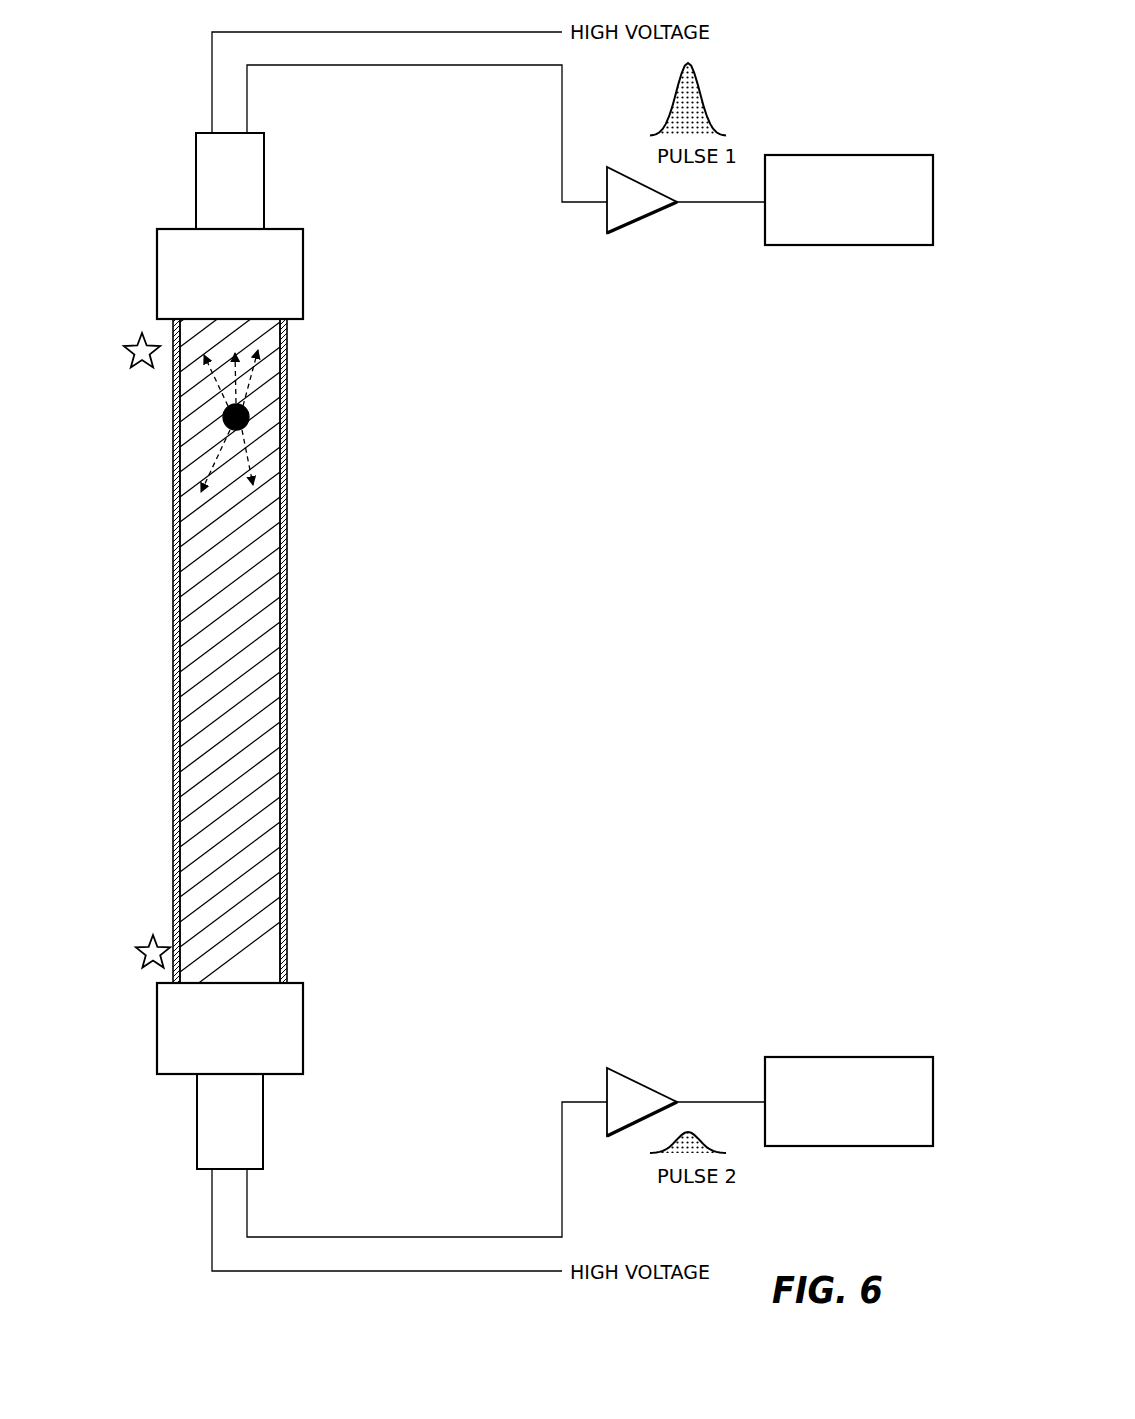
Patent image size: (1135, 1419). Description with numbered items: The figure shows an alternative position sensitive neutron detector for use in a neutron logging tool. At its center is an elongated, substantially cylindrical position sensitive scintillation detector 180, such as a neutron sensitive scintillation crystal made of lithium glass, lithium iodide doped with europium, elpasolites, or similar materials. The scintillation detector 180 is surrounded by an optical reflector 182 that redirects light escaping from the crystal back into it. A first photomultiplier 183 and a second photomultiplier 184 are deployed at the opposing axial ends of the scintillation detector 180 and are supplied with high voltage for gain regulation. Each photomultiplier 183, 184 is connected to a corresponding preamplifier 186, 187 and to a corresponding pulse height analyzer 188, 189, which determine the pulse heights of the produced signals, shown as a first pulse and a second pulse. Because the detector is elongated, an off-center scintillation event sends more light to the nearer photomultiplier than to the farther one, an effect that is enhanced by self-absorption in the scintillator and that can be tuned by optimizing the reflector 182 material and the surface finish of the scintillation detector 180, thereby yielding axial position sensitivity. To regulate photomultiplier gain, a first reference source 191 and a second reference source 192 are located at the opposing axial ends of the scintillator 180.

The position sensitive scintillation detector 180 is at (272, 817).
The optical reflector 182 is at (173, 650).
The first photomultiplier 183 is at (157, 272).
The second photomultiplier 184 is at (157, 1027).
The preamplifier 186 is at (641, 218).
The preamplifier 187 is at (643, 1081).
The pulse height analyzer 188 is at (871, 214).
The pulse height analyzer 189 is at (871, 1114).
The first reference source 191 is at (125, 357).
The second reference source 192 is at (147, 942).